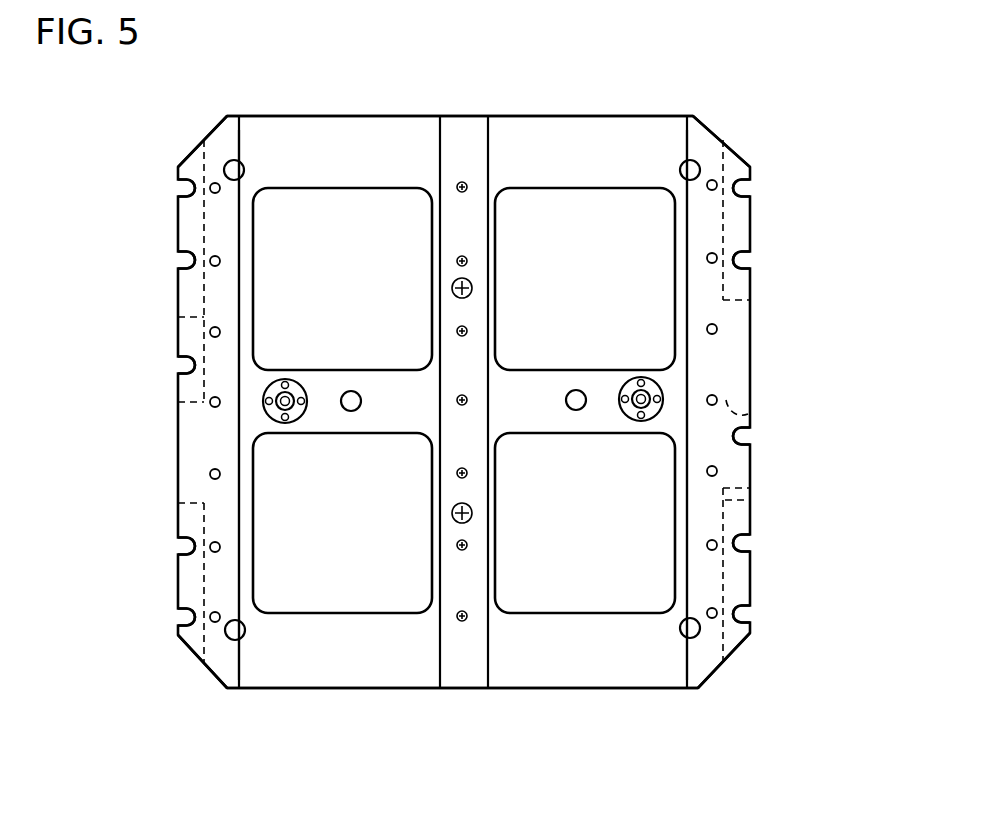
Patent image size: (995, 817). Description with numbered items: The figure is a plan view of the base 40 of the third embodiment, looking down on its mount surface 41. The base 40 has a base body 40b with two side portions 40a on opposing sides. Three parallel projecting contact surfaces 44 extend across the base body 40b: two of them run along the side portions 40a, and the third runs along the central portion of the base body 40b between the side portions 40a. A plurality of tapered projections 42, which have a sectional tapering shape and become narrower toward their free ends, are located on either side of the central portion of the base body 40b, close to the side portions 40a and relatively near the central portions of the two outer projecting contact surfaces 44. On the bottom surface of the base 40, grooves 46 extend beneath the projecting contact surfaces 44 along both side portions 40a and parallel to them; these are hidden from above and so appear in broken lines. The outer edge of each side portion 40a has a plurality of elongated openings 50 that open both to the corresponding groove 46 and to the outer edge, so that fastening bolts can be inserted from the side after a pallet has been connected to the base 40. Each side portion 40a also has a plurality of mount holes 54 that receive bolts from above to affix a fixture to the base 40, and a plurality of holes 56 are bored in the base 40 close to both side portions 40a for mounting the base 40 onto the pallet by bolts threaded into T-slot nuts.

The base 40 is at (752, 237).
The side portion 40a is at (192, 428).
The base body 40b is at (311, 689).
The mount surface 41 is at (662, 130).
The tapered projection 42 is at (300, 420).
The projecting contact surface 44 is at (228, 672).
The groove 46 is at (192, 395).
The elongated opening 50 is at (178, 262).
The mount hole 54 is at (207, 474).
The hole 56 is at (226, 170).